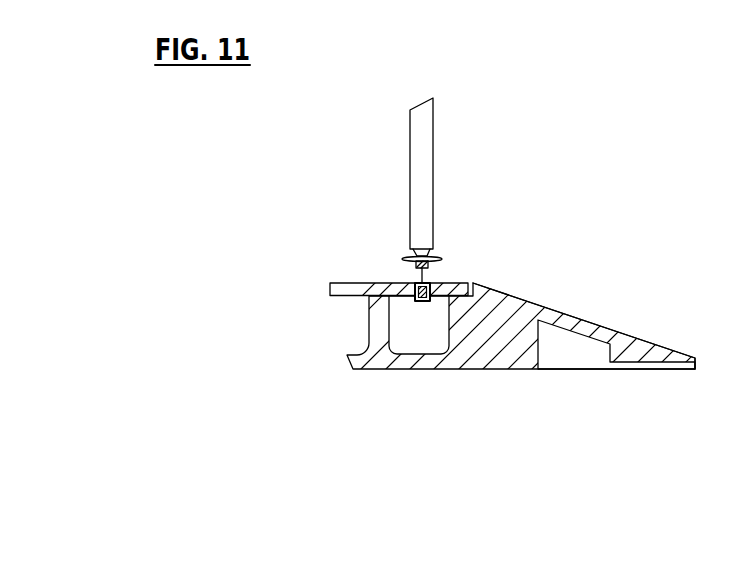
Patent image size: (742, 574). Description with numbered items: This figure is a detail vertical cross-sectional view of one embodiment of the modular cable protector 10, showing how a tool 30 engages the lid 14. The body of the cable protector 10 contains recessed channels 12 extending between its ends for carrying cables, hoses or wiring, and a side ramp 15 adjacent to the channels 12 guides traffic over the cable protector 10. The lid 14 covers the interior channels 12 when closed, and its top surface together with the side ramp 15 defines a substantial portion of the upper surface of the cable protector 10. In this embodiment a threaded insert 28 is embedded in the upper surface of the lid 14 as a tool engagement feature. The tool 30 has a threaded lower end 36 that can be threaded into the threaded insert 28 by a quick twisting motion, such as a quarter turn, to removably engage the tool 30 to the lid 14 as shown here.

The modular cable protector 10 is at (283, 293).
The channels 12 is at (418, 356).
The lid 14 is at (345, 284).
The side ramps 15 is at (555, 310).
The threaded inserts 28 is at (429, 284).
The tool 30 is at (450, 163).
The threaded lower end 36 is at (433, 258).